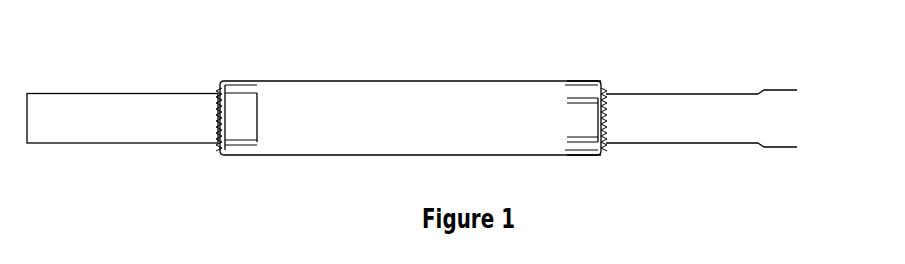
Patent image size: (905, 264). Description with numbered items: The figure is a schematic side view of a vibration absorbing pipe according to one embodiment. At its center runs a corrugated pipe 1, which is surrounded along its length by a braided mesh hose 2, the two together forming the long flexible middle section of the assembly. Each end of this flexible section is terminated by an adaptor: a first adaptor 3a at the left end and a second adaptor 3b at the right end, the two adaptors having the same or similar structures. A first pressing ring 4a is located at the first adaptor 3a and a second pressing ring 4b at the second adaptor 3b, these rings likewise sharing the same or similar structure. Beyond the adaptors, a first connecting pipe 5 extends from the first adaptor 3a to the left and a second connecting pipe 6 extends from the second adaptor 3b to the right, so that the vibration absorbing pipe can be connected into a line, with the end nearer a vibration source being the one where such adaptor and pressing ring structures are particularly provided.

The corrugated pipe 1 is at (443, 102).
The braided mesh hose 2 is at (376, 81).
The first adaptor 3a is at (218, 110).
The second adaptor 3b is at (605, 100).
The first pressing ring 4a is at (245, 93).
The second pressing ring 4b is at (575, 103).
The first connecting pipe 5 is at (110, 118).
The second connecting pipe 6 is at (692, 102).